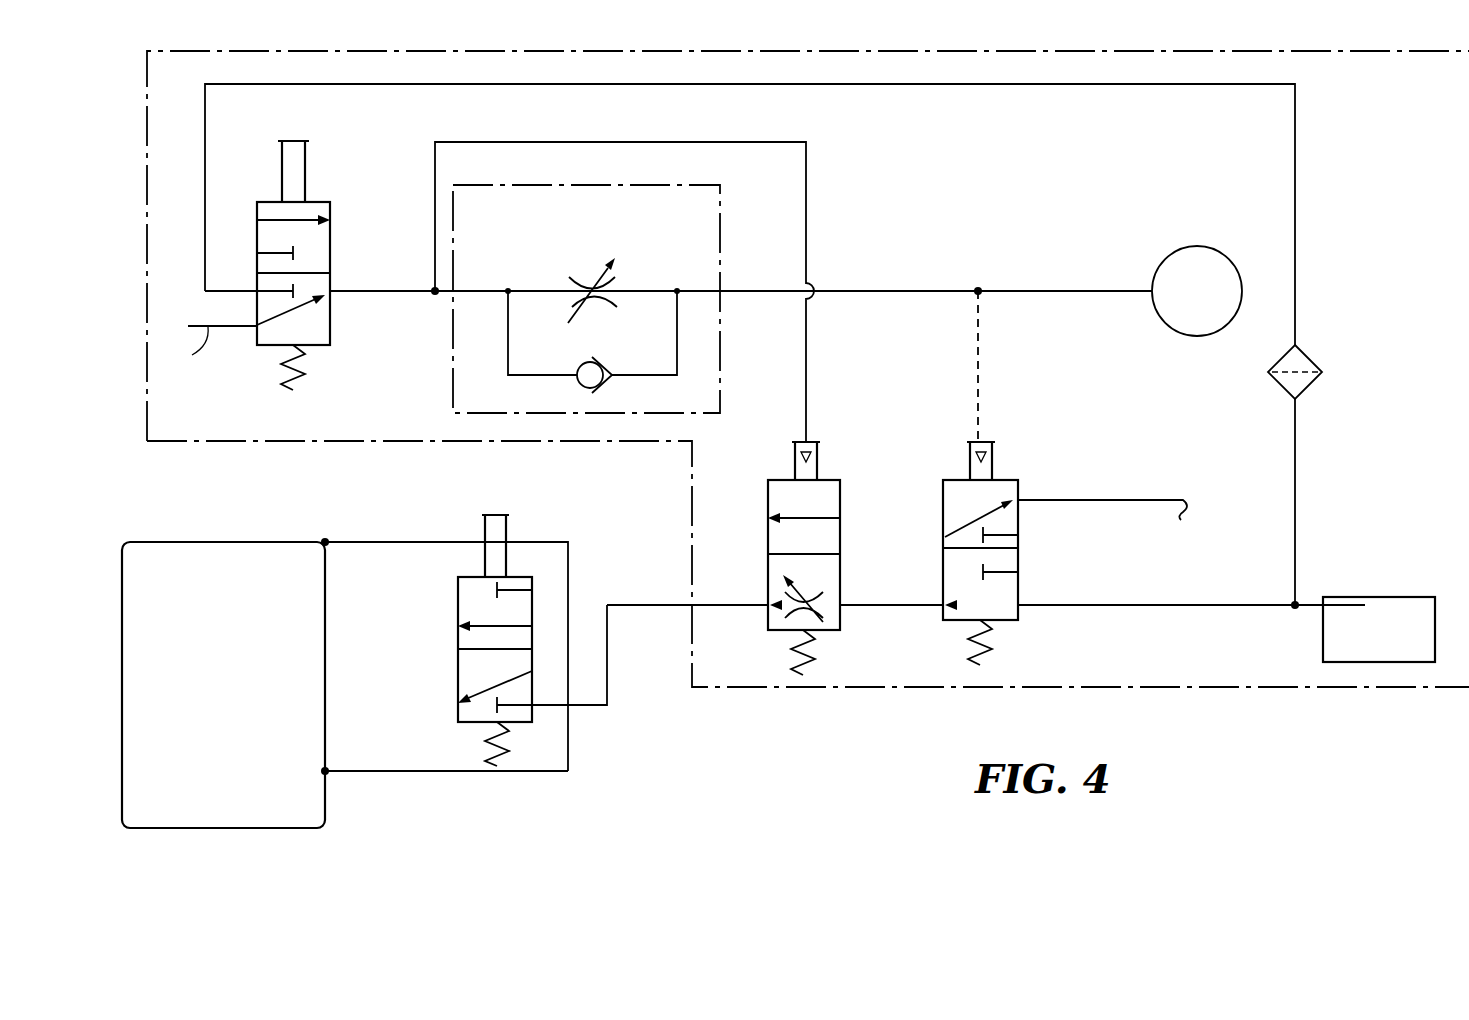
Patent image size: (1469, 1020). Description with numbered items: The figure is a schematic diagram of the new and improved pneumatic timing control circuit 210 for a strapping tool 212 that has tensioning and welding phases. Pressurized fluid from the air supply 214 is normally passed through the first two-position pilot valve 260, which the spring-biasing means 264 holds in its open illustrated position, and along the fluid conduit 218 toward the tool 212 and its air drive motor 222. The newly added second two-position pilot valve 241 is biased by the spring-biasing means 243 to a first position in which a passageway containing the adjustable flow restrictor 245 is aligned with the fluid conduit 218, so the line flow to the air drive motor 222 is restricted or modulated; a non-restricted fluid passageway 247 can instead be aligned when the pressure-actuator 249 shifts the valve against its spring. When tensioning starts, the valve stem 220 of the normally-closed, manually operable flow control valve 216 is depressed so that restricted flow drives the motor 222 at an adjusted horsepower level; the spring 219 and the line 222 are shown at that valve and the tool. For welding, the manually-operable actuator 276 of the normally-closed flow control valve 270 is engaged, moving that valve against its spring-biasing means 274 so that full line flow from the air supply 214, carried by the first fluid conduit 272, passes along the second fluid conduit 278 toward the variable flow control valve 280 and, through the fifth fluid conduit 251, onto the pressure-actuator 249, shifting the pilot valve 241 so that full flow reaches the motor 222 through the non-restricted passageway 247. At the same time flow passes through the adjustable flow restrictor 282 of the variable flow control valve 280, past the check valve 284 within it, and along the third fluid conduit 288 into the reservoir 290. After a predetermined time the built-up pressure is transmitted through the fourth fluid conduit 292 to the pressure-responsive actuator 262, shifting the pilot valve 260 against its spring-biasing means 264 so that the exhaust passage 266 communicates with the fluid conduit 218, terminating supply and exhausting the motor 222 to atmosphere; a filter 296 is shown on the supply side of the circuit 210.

The pneumatic timing control circuit 210 is at (707, 44).
The strapping tool 212 is at (305, 508).
The air supply 214 is at (1320, 620).
The flow control valve 216 is at (450, 588).
The fluid conduit 218 is at (607, 683).
The spring 219 is at (500, 753).
The valve stem 220 is at (507, 530).
The air drive motor 222 is at (328, 788).
The second two-position pilot valve 241 is at (847, 478).
The spring-biasing means 243 is at (815, 645).
The adjustable flow restrictor 245 is at (800, 588).
The non-restricted fluid passageway 247 is at (808, 520).
The pressure-actuator 249 is at (795, 455).
The fifth fluid conduit 251 is at (807, 197).
The first two-position pilot valve 260 is at (1022, 486).
The pressure-responsive actuator 262 is at (993, 463).
The spring-biasing means 264 is at (995, 647).
The exhaust passage 266 is at (1125, 500).
The flow control valve 270 is at (332, 235).
The first fluid conduit 272 is at (528, 88).
The spring-biasing means 274 is at (305, 378).
The manually-operable actuator 276 is at (305, 163).
The second fluid conduit 278 is at (420, 258).
The variable flow control valve 280 is at (590, 185).
The adjustable flow restrictor 282 is at (615, 262).
The check valve 284 is at (602, 360).
The third fluid conduit 288 is at (950, 292).
The reservoir 290 is at (1226, 260).
The fourth fluid conduit 292 is at (980, 343).
The filter 296 is at (1278, 390).